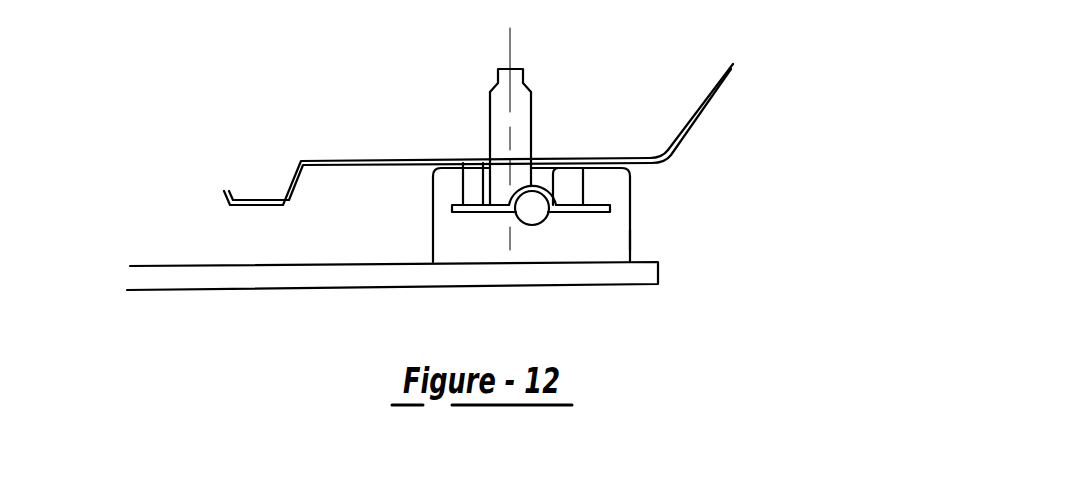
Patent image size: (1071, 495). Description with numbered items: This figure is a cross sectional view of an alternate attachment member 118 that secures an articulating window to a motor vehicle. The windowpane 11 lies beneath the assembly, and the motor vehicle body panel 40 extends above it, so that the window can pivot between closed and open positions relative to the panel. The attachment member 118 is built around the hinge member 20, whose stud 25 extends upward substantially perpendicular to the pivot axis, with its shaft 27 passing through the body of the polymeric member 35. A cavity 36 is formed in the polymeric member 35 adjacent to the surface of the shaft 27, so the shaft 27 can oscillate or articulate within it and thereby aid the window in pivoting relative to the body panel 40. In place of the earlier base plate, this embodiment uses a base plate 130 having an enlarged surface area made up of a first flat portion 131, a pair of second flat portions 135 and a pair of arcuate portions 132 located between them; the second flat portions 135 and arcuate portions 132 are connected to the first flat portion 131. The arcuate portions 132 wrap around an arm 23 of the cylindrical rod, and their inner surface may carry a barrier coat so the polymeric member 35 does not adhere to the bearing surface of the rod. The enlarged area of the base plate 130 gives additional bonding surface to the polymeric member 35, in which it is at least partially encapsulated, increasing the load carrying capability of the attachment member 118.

The windowpane 11 is at (245, 282).
The motor vehicle body panel 40 is at (333, 160).
The hinge member 20 is at (408, 192).
The base plate 130 is at (398, 232).
The cavity 36 is at (472, 178).
The stud 25 is at (528, 84).
The shaft 27 is at (512, 140).
The arm 23 is at (550, 198).
The first flat portion 131 is at (612, 206).
The attachment member 118 is at (652, 218).
The polymeric member 35 is at (630, 238).
The second flat portion 135 is at (462, 213).
The arcuate portion 132 is at (547, 222).